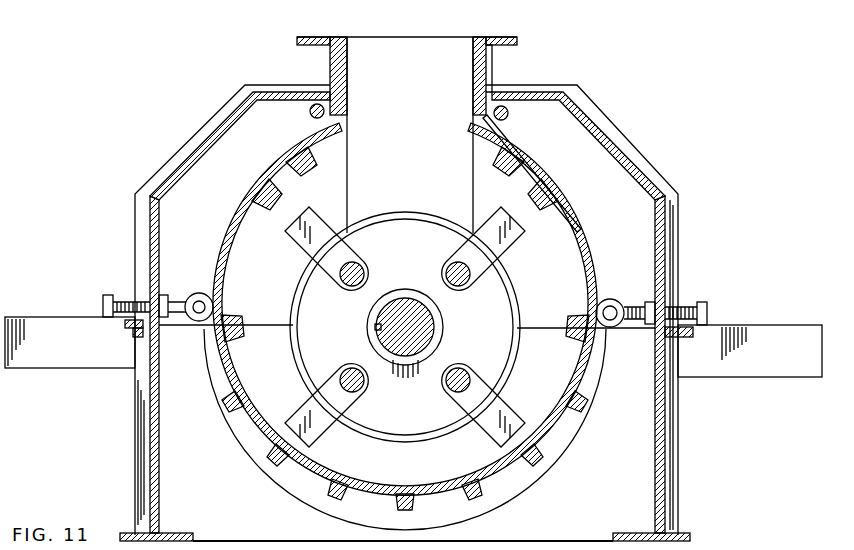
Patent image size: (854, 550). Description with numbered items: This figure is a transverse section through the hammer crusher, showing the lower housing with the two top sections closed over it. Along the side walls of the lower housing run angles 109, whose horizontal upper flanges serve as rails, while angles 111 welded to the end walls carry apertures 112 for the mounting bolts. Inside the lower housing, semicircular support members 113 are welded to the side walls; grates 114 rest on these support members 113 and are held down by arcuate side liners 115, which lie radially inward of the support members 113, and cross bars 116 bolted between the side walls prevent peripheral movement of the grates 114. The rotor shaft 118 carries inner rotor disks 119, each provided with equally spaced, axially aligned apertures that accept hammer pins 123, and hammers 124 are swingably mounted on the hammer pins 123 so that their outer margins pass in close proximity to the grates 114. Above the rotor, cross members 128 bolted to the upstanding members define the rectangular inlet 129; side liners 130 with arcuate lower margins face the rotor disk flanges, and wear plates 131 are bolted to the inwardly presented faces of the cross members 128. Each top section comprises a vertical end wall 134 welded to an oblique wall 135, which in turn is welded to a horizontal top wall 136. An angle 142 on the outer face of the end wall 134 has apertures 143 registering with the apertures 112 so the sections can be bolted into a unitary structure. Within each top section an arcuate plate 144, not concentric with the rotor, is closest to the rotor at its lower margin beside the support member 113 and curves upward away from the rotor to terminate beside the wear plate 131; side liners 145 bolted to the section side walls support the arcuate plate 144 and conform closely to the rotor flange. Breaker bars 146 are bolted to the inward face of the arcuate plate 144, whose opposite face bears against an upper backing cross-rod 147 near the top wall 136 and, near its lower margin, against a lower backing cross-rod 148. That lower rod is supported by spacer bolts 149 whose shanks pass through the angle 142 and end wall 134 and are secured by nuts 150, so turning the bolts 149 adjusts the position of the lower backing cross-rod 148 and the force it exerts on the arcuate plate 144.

The angles 109 is at (787, 380).
The angles 111 is at (687, 337).
The apertures 112 is at (138, 333).
The semicircular support members 113 is at (543, 470).
The grates 114 is at (578, 408).
The arcuate side liners 115 is at (270, 378).
The cross bars 116 is at (227, 347).
The rotor shaft 118 is at (430, 317).
The inner rotor disks 119 is at (518, 313).
The hammer pins 123 is at (447, 270).
The hammers 124 is at (478, 220).
The cross members 128 is at (490, 62).
The inlet 129 is at (453, 35).
The side liners 130 is at (377, 43).
The wear plates 131 is at (472, 78).
The end wall 134 is at (152, 230).
The oblique wall 135 is at (618, 150).
The horizontal top wall 136 is at (300, 90).
The angle 142 is at (665, 292).
The apertures 143 is at (125, 327).
The arcuate plate 144 is at (570, 207).
The side liners 145 is at (347, 132).
The breaker bars 146 is at (300, 177).
The upper backing cross-rod 147 is at (510, 117).
The lower backing cross-rod 148 is at (203, 294).
The spacer bolts 149 is at (102, 295).
The nuts 150 is at (645, 302).